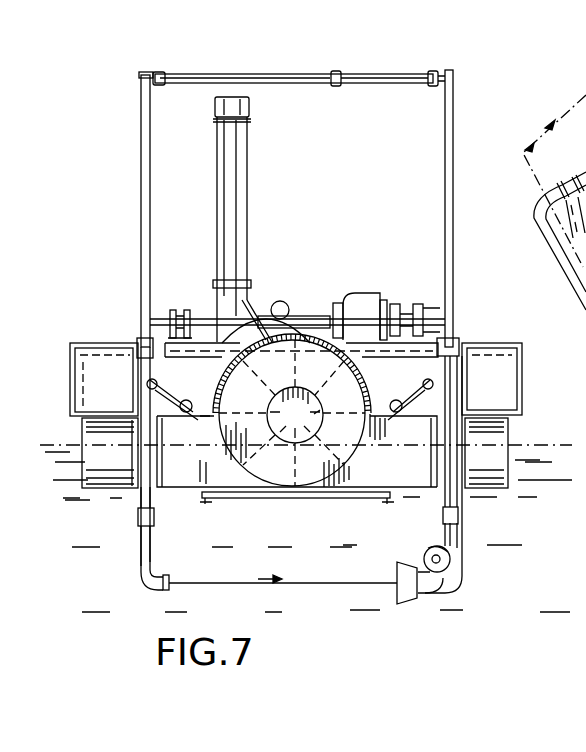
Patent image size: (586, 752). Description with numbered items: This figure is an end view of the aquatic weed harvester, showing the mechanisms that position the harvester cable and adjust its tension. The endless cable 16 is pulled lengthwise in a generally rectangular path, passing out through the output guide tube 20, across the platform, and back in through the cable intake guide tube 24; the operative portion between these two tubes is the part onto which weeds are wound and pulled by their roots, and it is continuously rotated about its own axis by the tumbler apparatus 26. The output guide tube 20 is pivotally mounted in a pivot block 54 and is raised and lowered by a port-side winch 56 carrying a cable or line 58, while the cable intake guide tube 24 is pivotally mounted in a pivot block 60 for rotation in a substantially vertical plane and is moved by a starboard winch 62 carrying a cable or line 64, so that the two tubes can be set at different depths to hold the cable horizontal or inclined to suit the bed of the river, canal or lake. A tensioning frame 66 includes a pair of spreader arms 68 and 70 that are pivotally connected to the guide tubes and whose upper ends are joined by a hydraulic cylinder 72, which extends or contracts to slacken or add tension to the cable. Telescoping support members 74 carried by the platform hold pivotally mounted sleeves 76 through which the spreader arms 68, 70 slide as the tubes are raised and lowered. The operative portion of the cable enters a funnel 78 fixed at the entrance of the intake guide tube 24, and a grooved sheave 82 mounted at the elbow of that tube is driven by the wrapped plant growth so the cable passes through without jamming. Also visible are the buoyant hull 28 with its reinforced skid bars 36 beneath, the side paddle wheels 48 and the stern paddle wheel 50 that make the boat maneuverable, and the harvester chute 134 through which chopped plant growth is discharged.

The endless cable 16 is at (205, 320).
The output guide tube 20 is at (141, 572).
The cable intake guide tube 24 is at (440, 304).
The tumbler apparatus 26 is at (289, 306).
The buoyant hull 28 is at (158, 492).
The reinforced skid bars 36 is at (224, 500).
The paddle wheels 48 is at (85, 436).
The third paddle wheel 50 is at (352, 490).
The pivot block 54 is at (172, 310).
The port-side winch 56 is at (297, 451).
The cable or line 58 is at (150, 536).
The pivot block 60 is at (394, 302).
The starboard winch 62 is at (403, 450).
The cable or line 64 is at (442, 530).
The tensioning frame 66 is at (465, 148).
The spreader arm 68 is at (150, 192).
The spreader arm 70 is at (445, 184).
The hydraulic cylinder 72 is at (356, 74).
The telescoping support members 74 is at (188, 356).
The pivotally mounted sleeves 76 is at (138, 342).
The funnel 78 is at (410, 598).
The sheave 82 is at (450, 556).
The harvester chute 134 is at (250, 222).